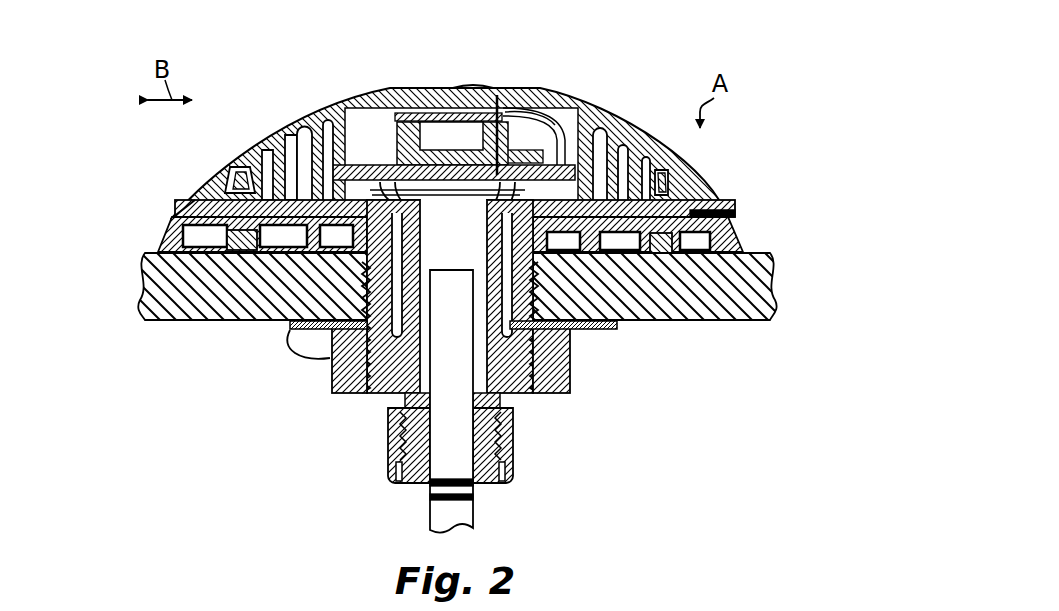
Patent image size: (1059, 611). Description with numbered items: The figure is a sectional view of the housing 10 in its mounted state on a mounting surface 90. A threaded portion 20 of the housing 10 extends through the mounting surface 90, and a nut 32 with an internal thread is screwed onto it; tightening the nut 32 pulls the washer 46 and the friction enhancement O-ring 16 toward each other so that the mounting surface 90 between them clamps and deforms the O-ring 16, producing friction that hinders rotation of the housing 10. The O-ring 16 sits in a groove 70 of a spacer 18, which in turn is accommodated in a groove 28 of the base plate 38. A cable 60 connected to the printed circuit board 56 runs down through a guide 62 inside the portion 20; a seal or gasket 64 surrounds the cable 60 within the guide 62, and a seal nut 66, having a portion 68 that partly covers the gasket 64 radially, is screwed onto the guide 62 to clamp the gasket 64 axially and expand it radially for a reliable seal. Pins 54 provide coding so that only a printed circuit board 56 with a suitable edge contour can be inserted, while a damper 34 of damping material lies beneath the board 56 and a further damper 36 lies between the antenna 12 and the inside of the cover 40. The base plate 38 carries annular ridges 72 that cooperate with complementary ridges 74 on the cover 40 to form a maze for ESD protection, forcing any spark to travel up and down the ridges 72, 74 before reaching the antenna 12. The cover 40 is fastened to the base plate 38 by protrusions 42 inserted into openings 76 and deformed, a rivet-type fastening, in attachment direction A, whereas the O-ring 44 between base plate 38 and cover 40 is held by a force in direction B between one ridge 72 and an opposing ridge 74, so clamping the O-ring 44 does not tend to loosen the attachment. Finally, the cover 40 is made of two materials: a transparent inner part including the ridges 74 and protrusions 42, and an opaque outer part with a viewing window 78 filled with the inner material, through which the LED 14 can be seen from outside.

The housing 10 is at (655, 90).
The antenna 12 is at (407, 130).
The LED 14 is at (528, 135).
The friction enhancement O-ring 16 is at (733, 241).
The spacer 18 is at (170, 238).
The portion 20 is at (680, 318).
The groove 28 is at (200, 213).
The nut 32 is at (570, 360).
The damper 34 is at (535, 192).
The further damper 36 is at (437, 95).
The base plate 38 is at (205, 207).
The cover 40 is at (360, 108).
The protrusions 42 is at (697, 213).
The O-ring 44 is at (222, 178).
The washer 46 is at (613, 327).
The pins 54 is at (318, 150).
The printed circuit board 56 is at (497, 95).
The cable 60 is at (458, 441).
The guide 62 is at (503, 396).
The seal or gasket 64 is at (487, 473).
The seal nut 66 is at (390, 458).
The portion 68 is at (425, 485).
The groove 70 is at (226, 250).
The ridges 72 is at (278, 148).
The ridges 74 is at (296, 235).
The openings 76 is at (680, 212).
The viewing window 78 is at (519, 110).
The mounting surface 90 is at (770, 294).